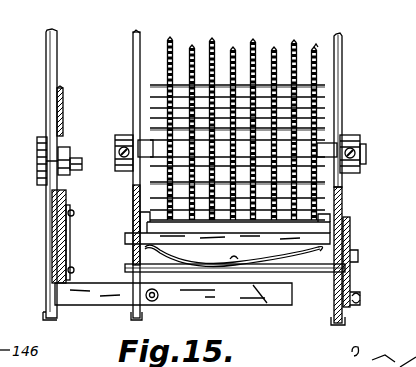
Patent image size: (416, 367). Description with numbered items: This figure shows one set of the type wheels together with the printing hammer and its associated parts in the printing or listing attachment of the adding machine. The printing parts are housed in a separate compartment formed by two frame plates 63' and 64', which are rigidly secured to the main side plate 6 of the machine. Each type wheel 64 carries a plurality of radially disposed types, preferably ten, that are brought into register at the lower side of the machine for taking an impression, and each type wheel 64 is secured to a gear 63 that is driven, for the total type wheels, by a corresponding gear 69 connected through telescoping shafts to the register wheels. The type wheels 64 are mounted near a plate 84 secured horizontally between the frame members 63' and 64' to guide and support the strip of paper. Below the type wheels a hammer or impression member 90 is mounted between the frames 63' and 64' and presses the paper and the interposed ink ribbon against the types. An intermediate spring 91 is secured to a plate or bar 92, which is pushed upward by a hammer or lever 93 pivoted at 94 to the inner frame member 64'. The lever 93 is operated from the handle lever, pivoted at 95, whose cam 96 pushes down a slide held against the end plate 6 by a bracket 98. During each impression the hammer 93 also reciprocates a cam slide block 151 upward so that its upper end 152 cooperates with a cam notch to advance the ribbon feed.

The side plate 6 is at (58, 60).
The pivot 94 is at (62, 122).
The cam 96 is at (50, 188).
The bracket 98 is at (70, 228).
The pivot 95 is at (63, 248).
The hammer or lever 93 is at (268, 300).
The intermediate spring 91 is at (340, 258).
The hammer or impression member 90 is at (277, 237).
The type wheel 64 is at (269, 128).
The gear 63 is at (254, 152).
The frame plate 63' is at (364, 113).
The plate 84 is at (343, 205).
The upper end of slide block 152 is at (349, 223).
The cam slide block 151 is at (355, 255).
The plate or bar 92 is at (358, 300).
The frame plate 64' is at (232, 165).
The gear 69 is at (314, 50).